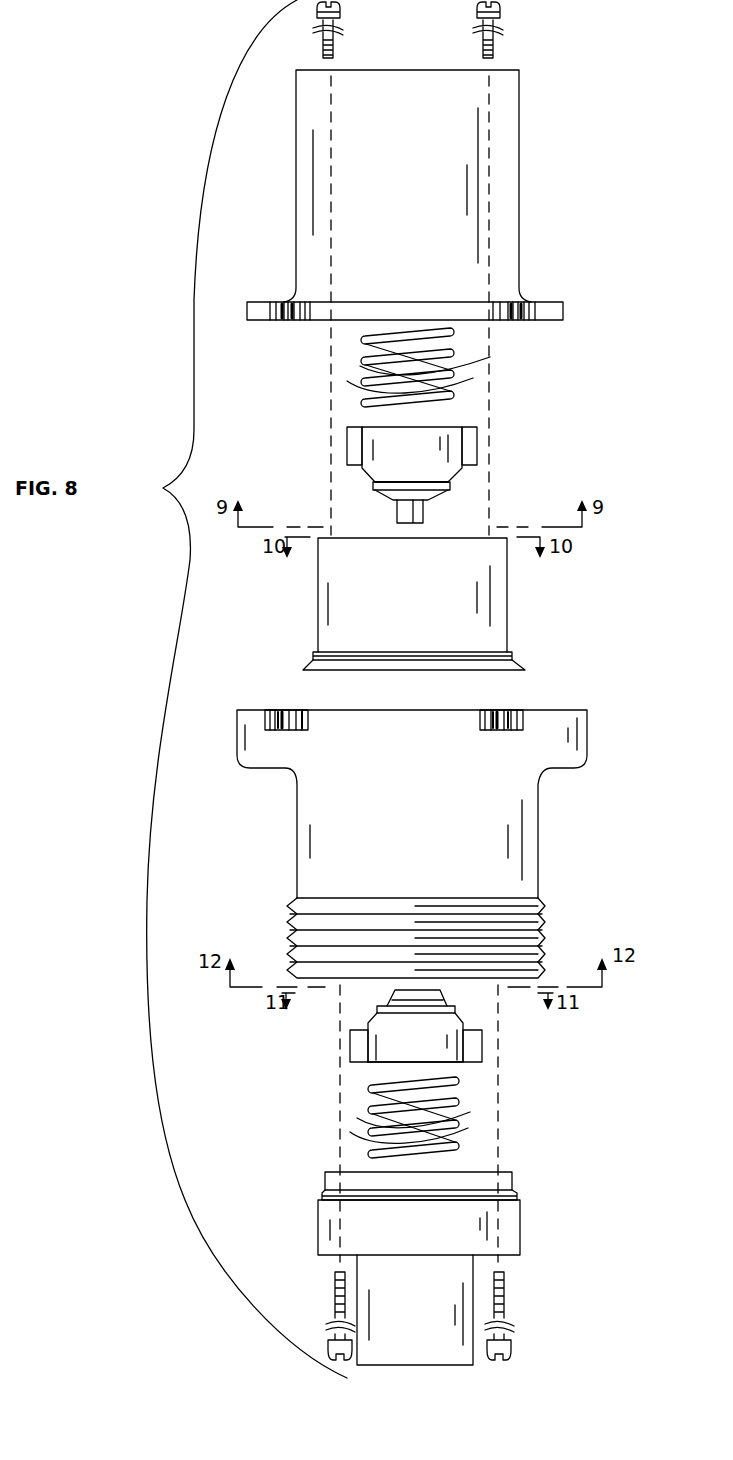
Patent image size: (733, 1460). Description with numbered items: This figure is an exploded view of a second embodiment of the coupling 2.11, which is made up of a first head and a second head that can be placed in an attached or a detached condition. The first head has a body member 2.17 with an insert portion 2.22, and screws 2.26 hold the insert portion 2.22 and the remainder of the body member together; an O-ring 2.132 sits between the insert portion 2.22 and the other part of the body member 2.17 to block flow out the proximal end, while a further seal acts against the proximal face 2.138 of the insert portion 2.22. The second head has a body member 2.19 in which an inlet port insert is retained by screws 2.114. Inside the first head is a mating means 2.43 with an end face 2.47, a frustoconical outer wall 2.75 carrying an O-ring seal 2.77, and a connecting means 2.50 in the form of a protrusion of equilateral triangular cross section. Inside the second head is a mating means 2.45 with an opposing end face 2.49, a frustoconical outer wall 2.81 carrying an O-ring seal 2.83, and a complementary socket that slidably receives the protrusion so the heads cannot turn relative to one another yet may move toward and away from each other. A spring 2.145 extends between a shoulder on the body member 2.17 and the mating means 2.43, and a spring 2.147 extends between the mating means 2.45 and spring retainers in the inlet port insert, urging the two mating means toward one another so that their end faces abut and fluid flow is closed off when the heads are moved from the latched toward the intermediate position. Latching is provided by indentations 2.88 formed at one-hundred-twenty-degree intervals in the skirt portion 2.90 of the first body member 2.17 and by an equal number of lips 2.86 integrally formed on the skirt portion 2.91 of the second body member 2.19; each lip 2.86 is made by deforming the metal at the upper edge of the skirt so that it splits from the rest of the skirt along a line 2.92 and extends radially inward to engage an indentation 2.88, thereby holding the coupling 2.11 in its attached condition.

The coupling 2.11 is at (612, 262).
The screws 2.26 is at (335, 42).
The body member 2.17 is at (504, 198).
The indentations 2.88 is at (302, 300).
The skirt portion 2.90 is at (562, 311).
The spring 2.145 is at (490, 357).
The mating means 2.43 is at (436, 436).
The O-ring seal 2.77 is at (422, 482).
The outer wall 2.75 is at (442, 492).
The end face 2.47 is at (397, 498).
The connecting means 2.50 is at (435, 511).
The insert portion 2.22 is at (492, 638).
The O-ring 2.132 is at (510, 653).
The proximal face 2.138 is at (497, 673).
The skirt portion 2.91 is at (580, 713).
The line 2.92 is at (282, 713).
The lips 2.86 is at (277, 712).
The body member 2.19 is at (528, 840).
The end face 2.49 is at (428, 988).
The outer wall 2.81 is at (372, 1003).
The O-ring seal 2.83 is at (393, 1013).
The mating means 2.45 is at (383, 1055).
The spring 2.147 is at (456, 1108).
The screws 2.114 is at (504, 1300).